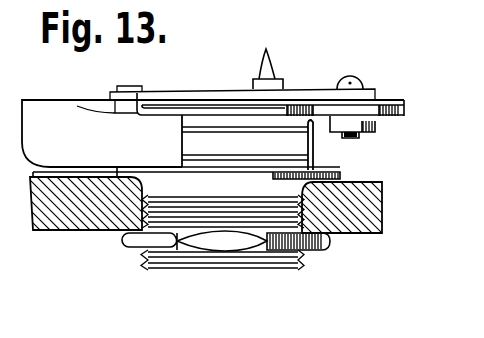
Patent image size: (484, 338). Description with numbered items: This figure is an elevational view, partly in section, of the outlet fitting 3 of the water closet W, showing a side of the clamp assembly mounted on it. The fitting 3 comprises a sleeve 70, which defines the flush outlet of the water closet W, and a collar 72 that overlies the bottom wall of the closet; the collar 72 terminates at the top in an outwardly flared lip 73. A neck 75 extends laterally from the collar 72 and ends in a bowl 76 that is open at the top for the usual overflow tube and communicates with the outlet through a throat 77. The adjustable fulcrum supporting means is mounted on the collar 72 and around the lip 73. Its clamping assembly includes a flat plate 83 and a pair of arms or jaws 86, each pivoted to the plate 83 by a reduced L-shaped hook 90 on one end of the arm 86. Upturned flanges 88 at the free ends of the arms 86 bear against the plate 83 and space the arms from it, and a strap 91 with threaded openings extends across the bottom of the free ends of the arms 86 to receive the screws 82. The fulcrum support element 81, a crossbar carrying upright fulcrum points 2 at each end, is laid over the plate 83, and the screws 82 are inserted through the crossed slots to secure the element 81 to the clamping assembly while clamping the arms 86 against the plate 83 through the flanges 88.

The bowl 76 is at (55, 100).
The neck 75 is at (96, 132).
The throat 77 is at (161, 141).
The L-shaped hook 90 is at (127, 86).
The fulcrum support element 81 is at (308, 89).
The flat plate 83 is at (181, 100).
The arms or jaws 86 is at (217, 100).
The upturned flanges 88 is at (405, 109).
The fulcrum points 2 is at (277, 73).
The screws 82 is at (358, 78).
The strap 91 is at (375, 128).
The outwardly flared lip 73 is at (312, 123).
The collar 72 is at (325, 170).
The water closet W is at (365, 236).
The sleeve 70 is at (296, 263).
The outlet fitting 3 is at (118, 247).